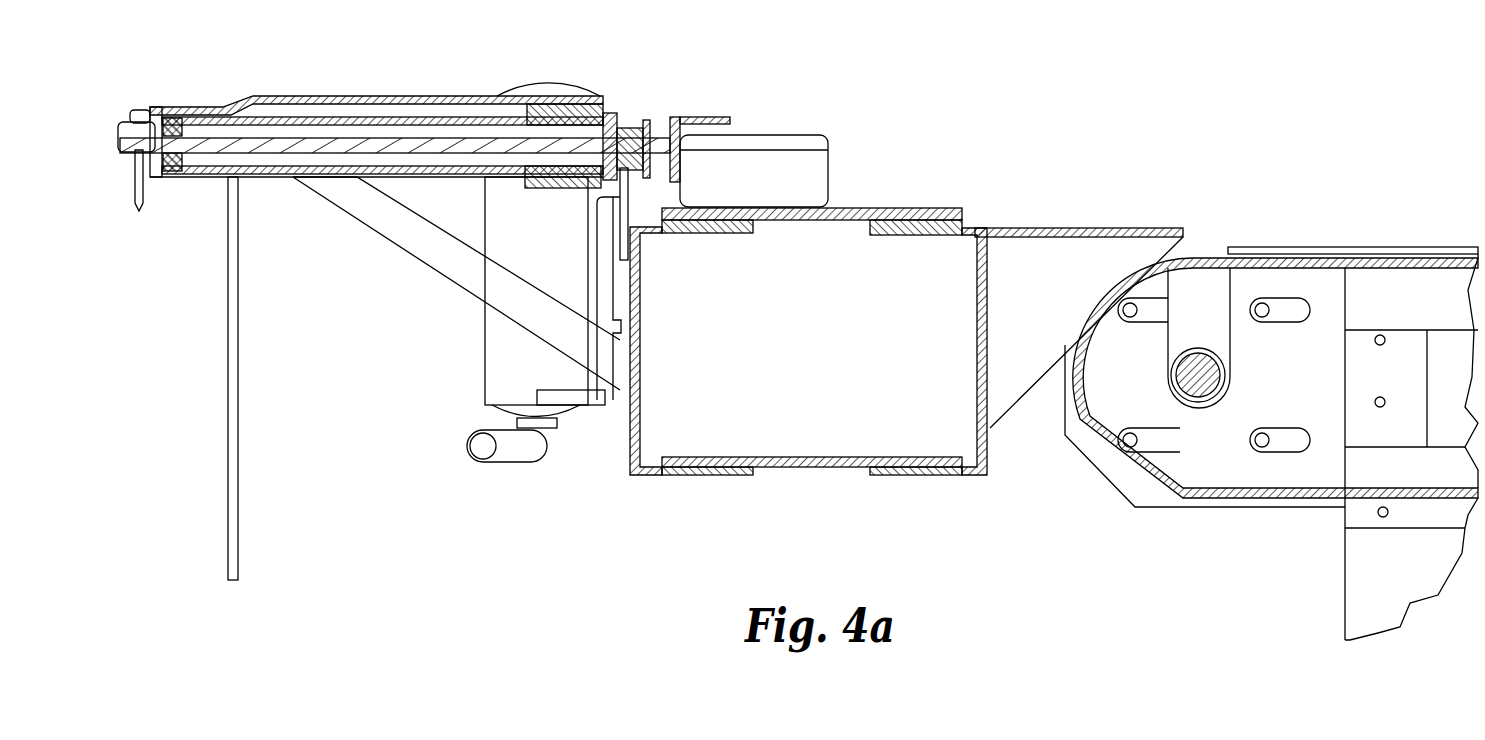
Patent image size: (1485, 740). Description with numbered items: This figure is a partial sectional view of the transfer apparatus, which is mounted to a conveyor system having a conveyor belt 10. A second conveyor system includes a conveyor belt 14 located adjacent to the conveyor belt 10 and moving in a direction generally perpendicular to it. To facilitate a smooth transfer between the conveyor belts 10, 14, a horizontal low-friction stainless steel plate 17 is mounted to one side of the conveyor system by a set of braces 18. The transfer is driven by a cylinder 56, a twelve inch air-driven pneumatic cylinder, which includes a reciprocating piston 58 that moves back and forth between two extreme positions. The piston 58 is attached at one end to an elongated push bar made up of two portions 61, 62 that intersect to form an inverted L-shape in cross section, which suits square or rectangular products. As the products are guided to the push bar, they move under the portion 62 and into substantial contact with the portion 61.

The conveyor belt 10 is at (853, 209).
The conveyor belt 14 is at (1297, 246).
The low-friction stainless steel plate 17 is at (1033, 228).
The braces 18 is at (1008, 372).
The cylinder 56 is at (253, 178).
The reciprocating piston 58 is at (397, 166).
The portion of push bar 61 is at (673, 162).
The portion of push bar 62 is at (697, 114).